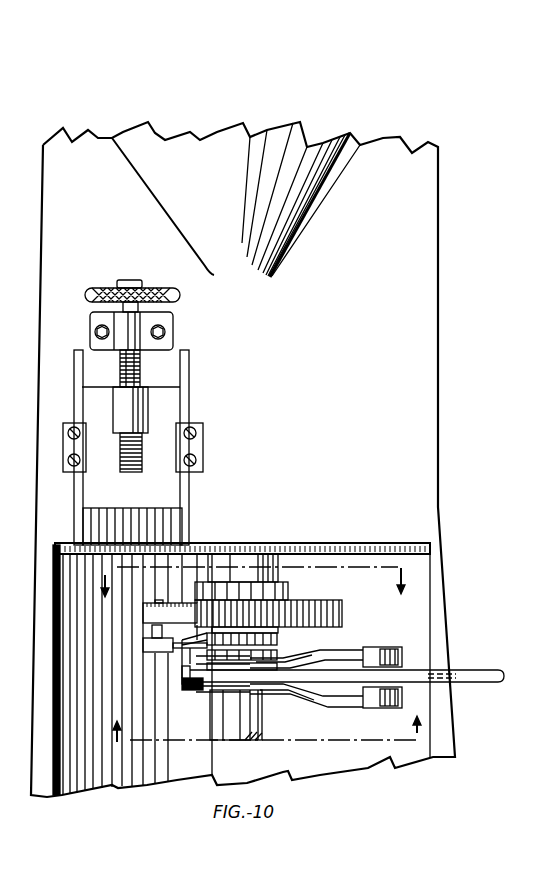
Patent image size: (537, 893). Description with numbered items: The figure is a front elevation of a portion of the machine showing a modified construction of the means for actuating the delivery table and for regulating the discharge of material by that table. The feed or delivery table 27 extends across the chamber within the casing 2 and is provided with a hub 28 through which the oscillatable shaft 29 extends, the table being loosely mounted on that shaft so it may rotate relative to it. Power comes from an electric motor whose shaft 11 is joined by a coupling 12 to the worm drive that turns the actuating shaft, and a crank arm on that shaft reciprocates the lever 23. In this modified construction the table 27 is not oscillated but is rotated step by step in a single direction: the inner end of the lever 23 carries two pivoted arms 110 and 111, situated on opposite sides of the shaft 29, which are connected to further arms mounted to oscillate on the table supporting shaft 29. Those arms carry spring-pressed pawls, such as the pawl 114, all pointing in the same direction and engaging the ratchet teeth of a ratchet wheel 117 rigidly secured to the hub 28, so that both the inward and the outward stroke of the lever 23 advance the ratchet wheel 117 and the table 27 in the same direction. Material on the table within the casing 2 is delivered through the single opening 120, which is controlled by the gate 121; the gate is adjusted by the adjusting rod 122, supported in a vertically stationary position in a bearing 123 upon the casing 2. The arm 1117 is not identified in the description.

The casing 2 is at (428, 389).
The shaft 11 is at (249, 593).
The coupling 12 is at (264, 721).
The lever 23 is at (479, 658).
The feed or delivery table 27 is at (351, 527).
The hub 28 is at (280, 573).
The oscillatable shaft 29 is at (262, 718).
The arm 110 is at (182, 654).
The arm 111 is at (180, 657).
The pawl 114 is at (157, 616).
The ratchet wheel 117 is at (343, 603).
The single opening 120 is at (155, 528).
The gate 121 is at (163, 493).
The adjusting rod 122 is at (140, 372).
The bearing 123 is at (143, 325).
The tube 1117 is at (352, 653).